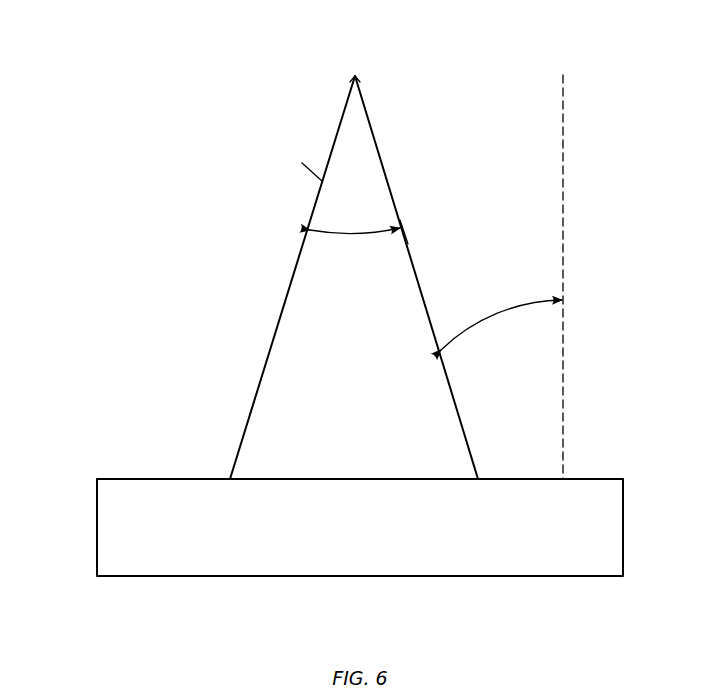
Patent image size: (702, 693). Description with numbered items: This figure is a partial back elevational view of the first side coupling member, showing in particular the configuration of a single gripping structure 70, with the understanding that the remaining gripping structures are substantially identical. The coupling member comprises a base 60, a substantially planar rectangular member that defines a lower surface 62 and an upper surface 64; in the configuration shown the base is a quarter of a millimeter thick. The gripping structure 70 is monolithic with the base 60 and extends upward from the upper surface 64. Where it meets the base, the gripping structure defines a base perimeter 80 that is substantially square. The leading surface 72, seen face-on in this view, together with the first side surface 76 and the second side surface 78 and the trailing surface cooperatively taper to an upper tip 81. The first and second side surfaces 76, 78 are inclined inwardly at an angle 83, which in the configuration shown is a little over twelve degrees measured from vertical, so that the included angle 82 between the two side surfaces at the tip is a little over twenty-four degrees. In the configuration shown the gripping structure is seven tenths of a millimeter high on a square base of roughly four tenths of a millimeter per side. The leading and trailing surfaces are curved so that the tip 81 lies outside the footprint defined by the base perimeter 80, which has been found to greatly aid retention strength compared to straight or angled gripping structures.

The base 60 is at (85, 465).
The lower surface 62 is at (360, 578).
The upper surface 64 is at (168, 478).
The gripping structure 70 is at (467, 95).
The leading surface 72 is at (354, 277).
The first side surface 76 is at (408, 244).
The second side surface 78 is at (322, 181).
The base perimeter 80 is at (391, 478).
The upper tip 81 is at (355, 70).
The included angle 82 is at (355, 234).
The angle 83 is at (497, 312).